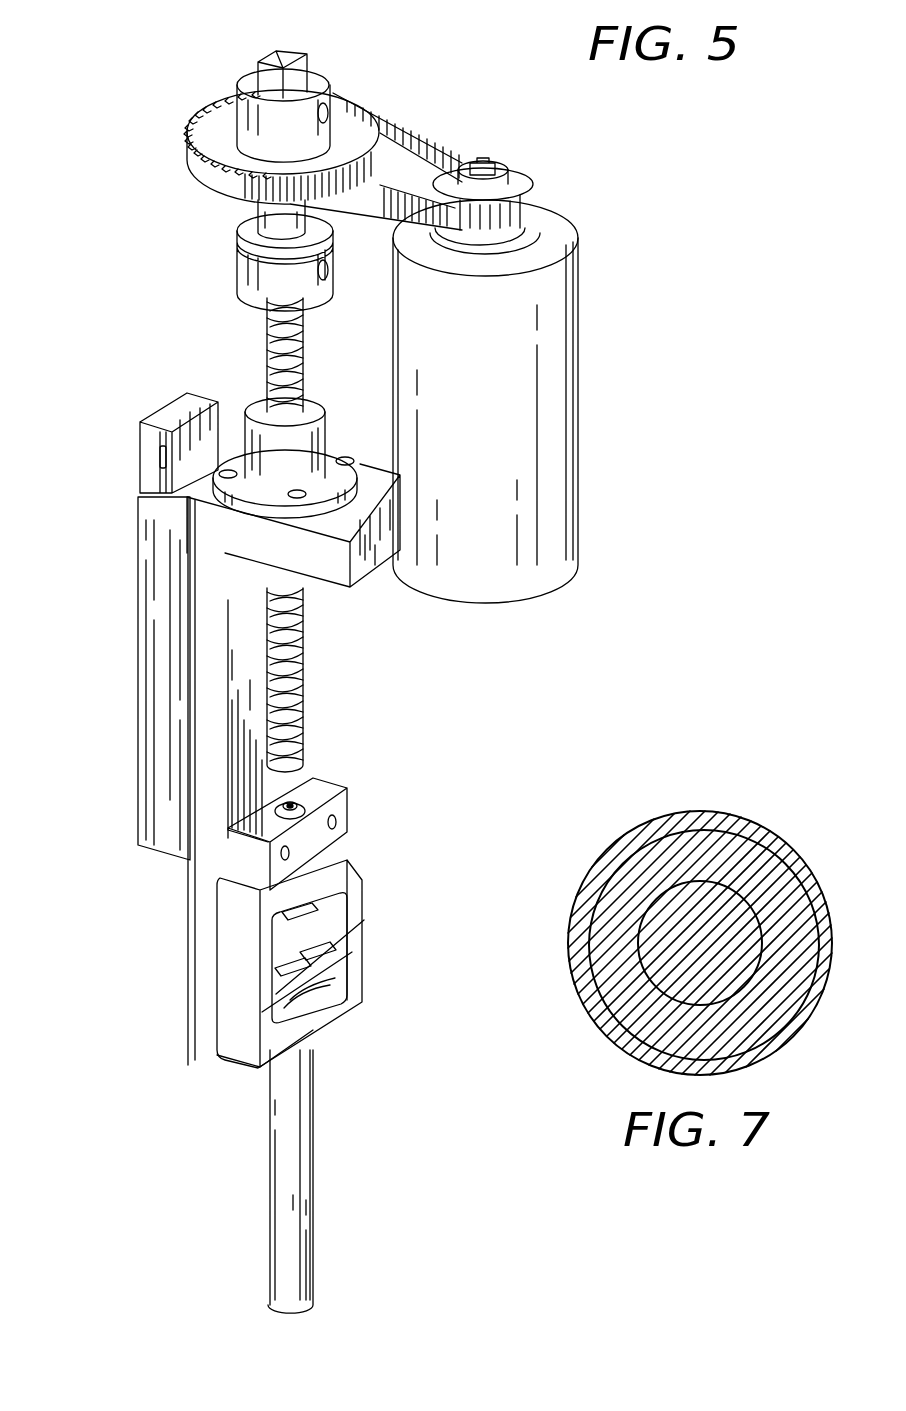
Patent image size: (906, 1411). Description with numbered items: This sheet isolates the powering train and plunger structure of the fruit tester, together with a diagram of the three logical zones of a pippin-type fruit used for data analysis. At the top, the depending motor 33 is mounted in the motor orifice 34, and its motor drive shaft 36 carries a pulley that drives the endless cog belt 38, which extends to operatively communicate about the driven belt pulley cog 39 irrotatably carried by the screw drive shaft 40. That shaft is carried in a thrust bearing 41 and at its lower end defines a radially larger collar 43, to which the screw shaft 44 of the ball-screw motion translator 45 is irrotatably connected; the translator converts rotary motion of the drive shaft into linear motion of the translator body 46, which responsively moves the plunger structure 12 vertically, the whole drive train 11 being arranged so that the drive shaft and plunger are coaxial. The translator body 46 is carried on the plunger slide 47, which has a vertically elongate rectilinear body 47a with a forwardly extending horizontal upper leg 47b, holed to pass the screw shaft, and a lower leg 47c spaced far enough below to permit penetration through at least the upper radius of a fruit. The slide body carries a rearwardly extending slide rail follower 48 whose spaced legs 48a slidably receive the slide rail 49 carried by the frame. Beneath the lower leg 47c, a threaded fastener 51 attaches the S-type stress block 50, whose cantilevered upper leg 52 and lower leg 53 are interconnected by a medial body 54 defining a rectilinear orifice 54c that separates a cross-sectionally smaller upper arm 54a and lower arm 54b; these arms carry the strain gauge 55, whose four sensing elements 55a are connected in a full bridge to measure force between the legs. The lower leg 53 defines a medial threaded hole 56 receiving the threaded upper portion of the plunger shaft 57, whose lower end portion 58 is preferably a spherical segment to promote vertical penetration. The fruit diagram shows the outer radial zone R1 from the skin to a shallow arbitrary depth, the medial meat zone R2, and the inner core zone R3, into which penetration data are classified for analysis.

In FIG. 5, the drive assembly 11 is at (361, 132).
In FIG. 5, the plunger structure 12 is at (251, 855).
In FIG. 5, the motor 33 is at (578, 310).
In FIG. 5, the motor orifice 34 is at (512, 184).
In FIG. 5, the motor drive shaft 36 is at (483, 160).
In FIG. 5, the endless cog belt 38 is at (418, 133).
In FIG. 5, the driven belt pulley cog 39 is at (235, 118).
In FIG. 5, the screw drive shaft 40 is at (285, 50).
In FIG. 5, the thrust bearing 41 is at (250, 205).
In FIG. 5, the collar 43 is at (245, 268).
In FIG. 5, the screw shaft 44 is at (300, 356).
In FIG. 5, the ball-screw motion translator 45 is at (268, 535).
In FIG. 5, the translator body 46 is at (320, 438).
In FIG. 5, the plunger slide 47 is at (222, 765).
In FIG. 5, the rectilinear body 47a is at (165, 785).
In FIG. 5, the upper leg 47b is at (328, 568).
In FIG. 5, the lower leg 47c is at (248, 858).
In FIG. 5, the slide rail follower 48 is at (141, 469).
In FIG. 5, the legs 48a is at (172, 703).
In FIG. 5, the slide rail 49 is at (168, 452).
In FIG. 5, the stress block 50 is at (283, 1028).
In FIG. 5, the threaded fastener 51 is at (305, 800).
In FIG. 5, the upper leg 52 is at (338, 814).
In FIG. 5, the lower leg 53 is at (235, 1060).
In FIG. 5, the medial laterally extending body 54 is at (267, 955).
In FIG. 5, the upper arm 54a is at (282, 928).
In FIG. 5, the lower arm 54b is at (332, 958).
In FIG. 5, the rectilinear orifice 54c is at (300, 962).
In FIG. 5, the strain gauge 55 is at (283, 977).
In FIG. 5, the sensing elements 55a is at (305, 905).
In FIG. 5, the medial threaded hole 56 is at (297, 996).
In FIG. 5, the plunger shaft 57 is at (320, 1012).
In FIG. 5, the lower end portion 58 is at (290, 1315).
In FIG. 7, the first outer radial zone R1 is at (694, 943).
In FIG. 7, the second medial radial zone R2 is at (704, 945).
In FIG. 7, the innermost zone R3 is at (700, 943).